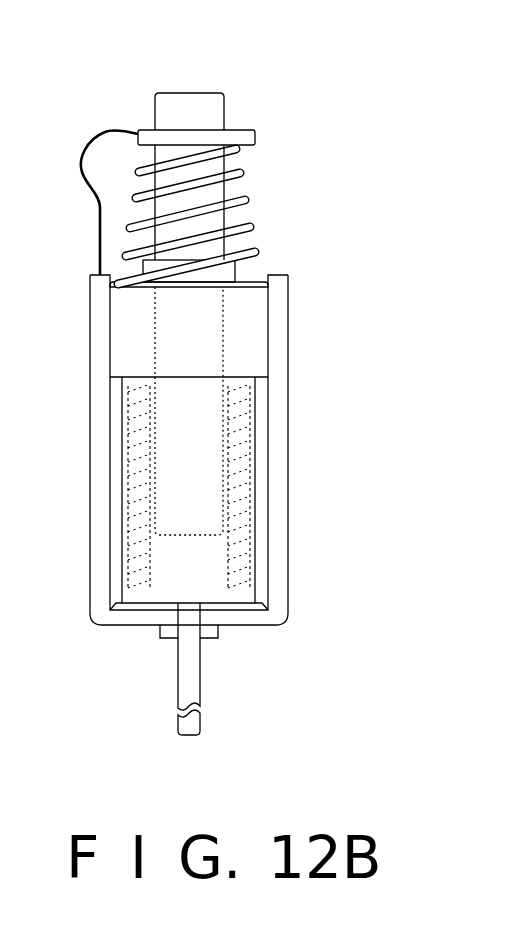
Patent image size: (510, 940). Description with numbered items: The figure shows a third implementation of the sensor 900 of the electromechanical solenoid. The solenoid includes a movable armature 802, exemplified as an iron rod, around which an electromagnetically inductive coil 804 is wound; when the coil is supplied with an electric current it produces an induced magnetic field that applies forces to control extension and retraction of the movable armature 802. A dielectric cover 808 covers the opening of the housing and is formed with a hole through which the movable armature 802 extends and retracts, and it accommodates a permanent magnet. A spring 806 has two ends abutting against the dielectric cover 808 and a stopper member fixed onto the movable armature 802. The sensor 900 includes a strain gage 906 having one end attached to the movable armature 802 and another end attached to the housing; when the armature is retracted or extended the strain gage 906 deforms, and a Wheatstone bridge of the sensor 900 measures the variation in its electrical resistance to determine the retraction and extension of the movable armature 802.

The sensor 900 is at (108, 112).
The movable armature 802 is at (204, 118).
The electromagnetically inductive coil 804 is at (265, 443).
The spring 806 is at (247, 200).
The dielectric cover 808 is at (247, 330).
The strain gage 906 is at (80, 175).